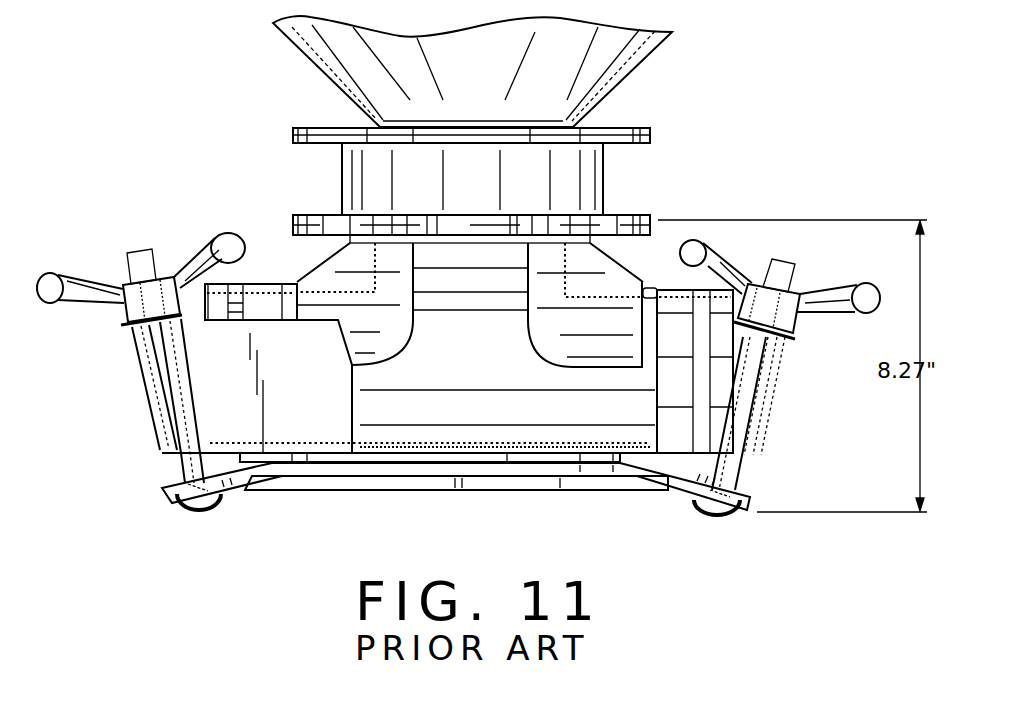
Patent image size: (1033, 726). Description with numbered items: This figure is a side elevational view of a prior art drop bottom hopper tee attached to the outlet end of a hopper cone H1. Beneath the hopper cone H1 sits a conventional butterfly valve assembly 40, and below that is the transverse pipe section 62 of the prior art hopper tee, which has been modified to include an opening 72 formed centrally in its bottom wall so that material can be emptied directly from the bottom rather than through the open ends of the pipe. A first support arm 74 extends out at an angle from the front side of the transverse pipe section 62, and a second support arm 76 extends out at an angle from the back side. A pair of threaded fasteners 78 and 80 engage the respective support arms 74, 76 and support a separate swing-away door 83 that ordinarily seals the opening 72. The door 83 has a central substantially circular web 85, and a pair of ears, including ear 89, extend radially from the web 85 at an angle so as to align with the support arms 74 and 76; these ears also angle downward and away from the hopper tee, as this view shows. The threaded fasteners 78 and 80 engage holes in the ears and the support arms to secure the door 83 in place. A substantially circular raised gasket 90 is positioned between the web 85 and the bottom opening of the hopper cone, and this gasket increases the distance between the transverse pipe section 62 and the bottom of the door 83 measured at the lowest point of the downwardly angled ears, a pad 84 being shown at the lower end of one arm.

The hopper H1 is at (588, 57).
The butterfly valve assembly 40 is at (570, 170).
The transverse pipe section 62 is at (510, 343).
The opening 72 is at (428, 440).
The first support arm 74 is at (141, 252).
The second support arm 76 is at (770, 344).
The threaded fastener 78 is at (187, 463).
The threaded fastener 80 is at (727, 470).
The swing-away door 83 is at (318, 491).
The left foot pad 84 is at (173, 494).
The central substantially circular web 85 is at (482, 472).
The ear 89 is at (738, 510).
The raised gasket 90 is at (397, 460).